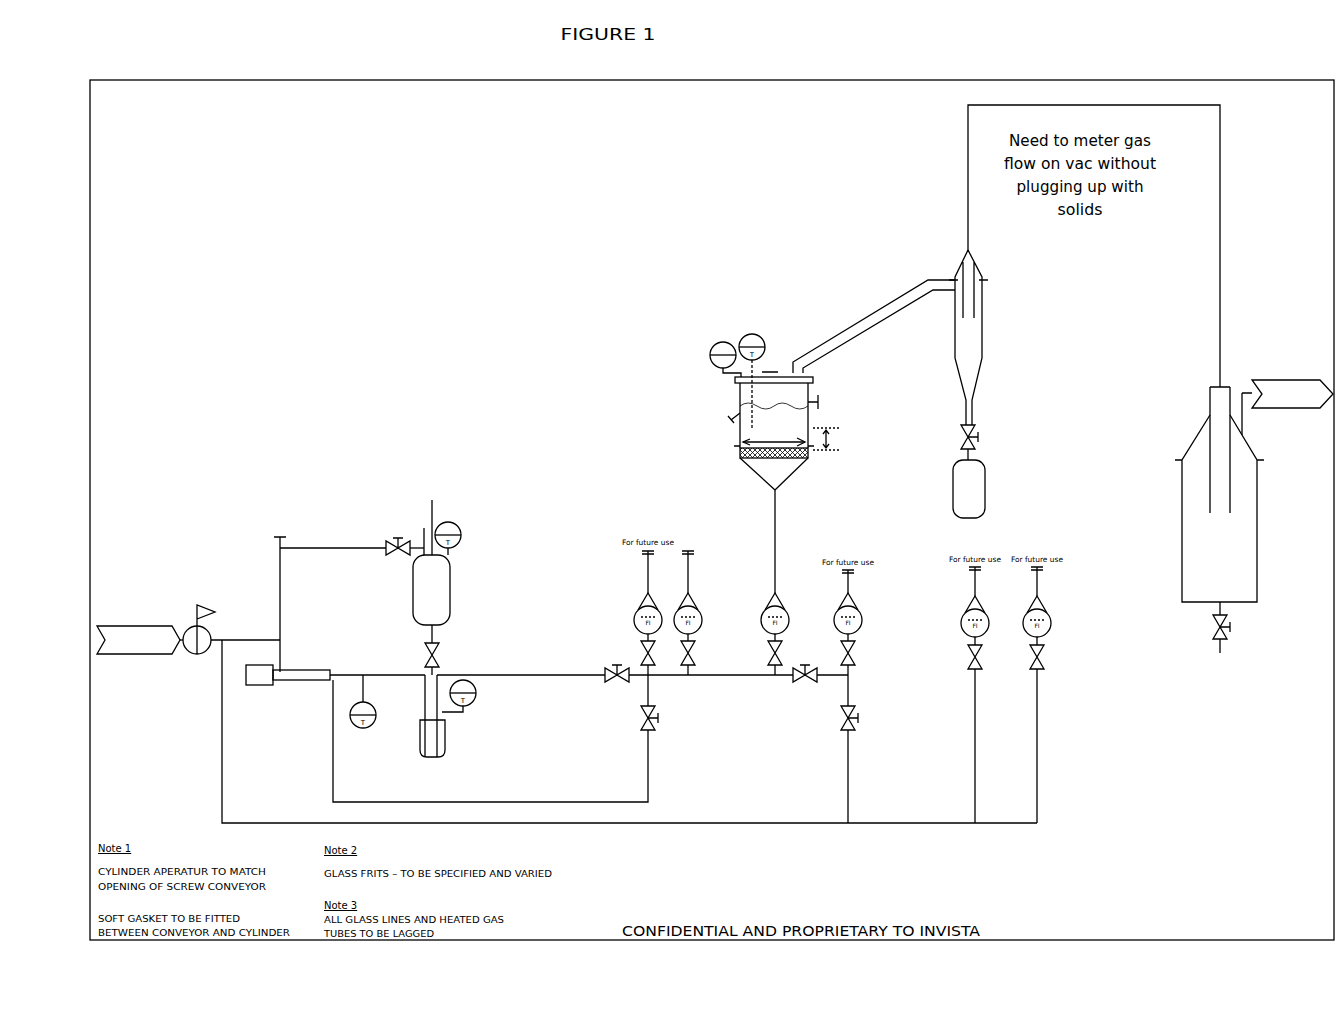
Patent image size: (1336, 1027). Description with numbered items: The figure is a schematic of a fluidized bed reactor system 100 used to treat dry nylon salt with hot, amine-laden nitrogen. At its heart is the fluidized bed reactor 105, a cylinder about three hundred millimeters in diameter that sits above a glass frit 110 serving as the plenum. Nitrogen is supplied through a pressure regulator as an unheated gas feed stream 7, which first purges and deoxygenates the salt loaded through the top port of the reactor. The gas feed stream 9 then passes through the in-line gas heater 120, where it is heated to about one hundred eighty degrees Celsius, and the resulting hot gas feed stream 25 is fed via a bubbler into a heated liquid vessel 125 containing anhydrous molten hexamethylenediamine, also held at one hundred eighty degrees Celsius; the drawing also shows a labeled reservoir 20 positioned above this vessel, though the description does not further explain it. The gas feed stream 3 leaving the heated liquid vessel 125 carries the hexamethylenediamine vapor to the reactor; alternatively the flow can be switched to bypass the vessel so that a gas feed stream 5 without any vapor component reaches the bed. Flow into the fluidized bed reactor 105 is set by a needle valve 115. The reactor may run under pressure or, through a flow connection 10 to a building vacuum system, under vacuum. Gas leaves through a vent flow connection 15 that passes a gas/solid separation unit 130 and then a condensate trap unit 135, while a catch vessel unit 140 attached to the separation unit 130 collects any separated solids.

The fluidized bed reactor system 100 is at (510, 200).
The gas feed stream 3 is at (523, 672).
The gas feed stream 5 is at (651, 770).
The unheated nitrogen gas feed stream 7 is at (220, 768).
The gas feed stream 9 is at (278, 647).
The flow connection 10 is at (1245, 412).
The vent flow connection 15 is at (925, 291).
The HMD reservoir 20 is at (453, 573).
The hot gas feed stream 25 is at (398, 679).
The fluidized bed reactor 105 is at (738, 398).
The glass frit 110 is at (760, 461).
The needle valve 115 is at (766, 661).
The in-line gas heater 120 is at (293, 667).
The heated liquid vessel 125 is at (417, 744).
The gas/solid separation unit 130 is at (984, 360).
The condensate trap unit 135 is at (1180, 500).
The catch vessel unit 140 is at (972, 521).